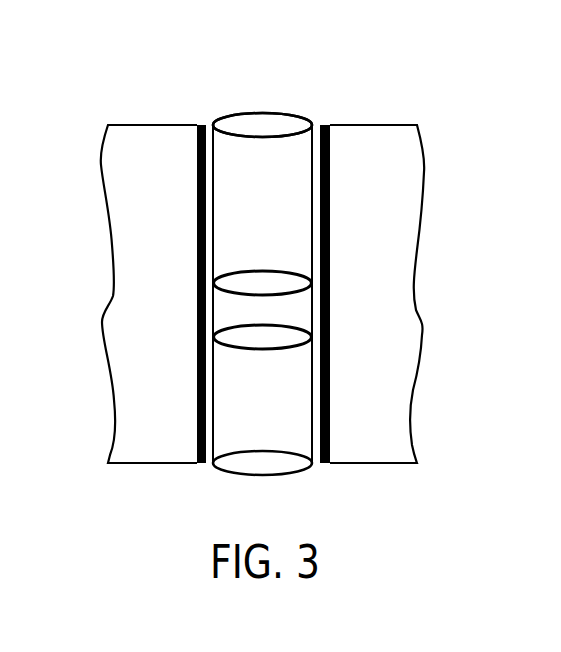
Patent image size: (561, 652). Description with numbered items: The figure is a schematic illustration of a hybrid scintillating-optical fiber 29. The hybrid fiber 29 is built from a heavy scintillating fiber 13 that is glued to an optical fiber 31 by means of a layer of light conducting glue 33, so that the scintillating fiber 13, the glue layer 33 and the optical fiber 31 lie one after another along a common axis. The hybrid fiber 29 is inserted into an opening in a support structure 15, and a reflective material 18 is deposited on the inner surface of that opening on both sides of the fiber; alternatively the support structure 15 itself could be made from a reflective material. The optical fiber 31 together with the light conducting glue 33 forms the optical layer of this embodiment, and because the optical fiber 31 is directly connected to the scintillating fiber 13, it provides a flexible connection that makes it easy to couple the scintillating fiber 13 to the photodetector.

The heavy scintillating fiber 13 is at (279, 152).
The support structure 15 is at (135, 464).
The reflective material 18 is at (196, 187).
The hybrid scintillating-optical fiber 29 is at (228, 88).
The optical fiber 31 is at (297, 412).
The light conducting glue 33 is at (297, 307).